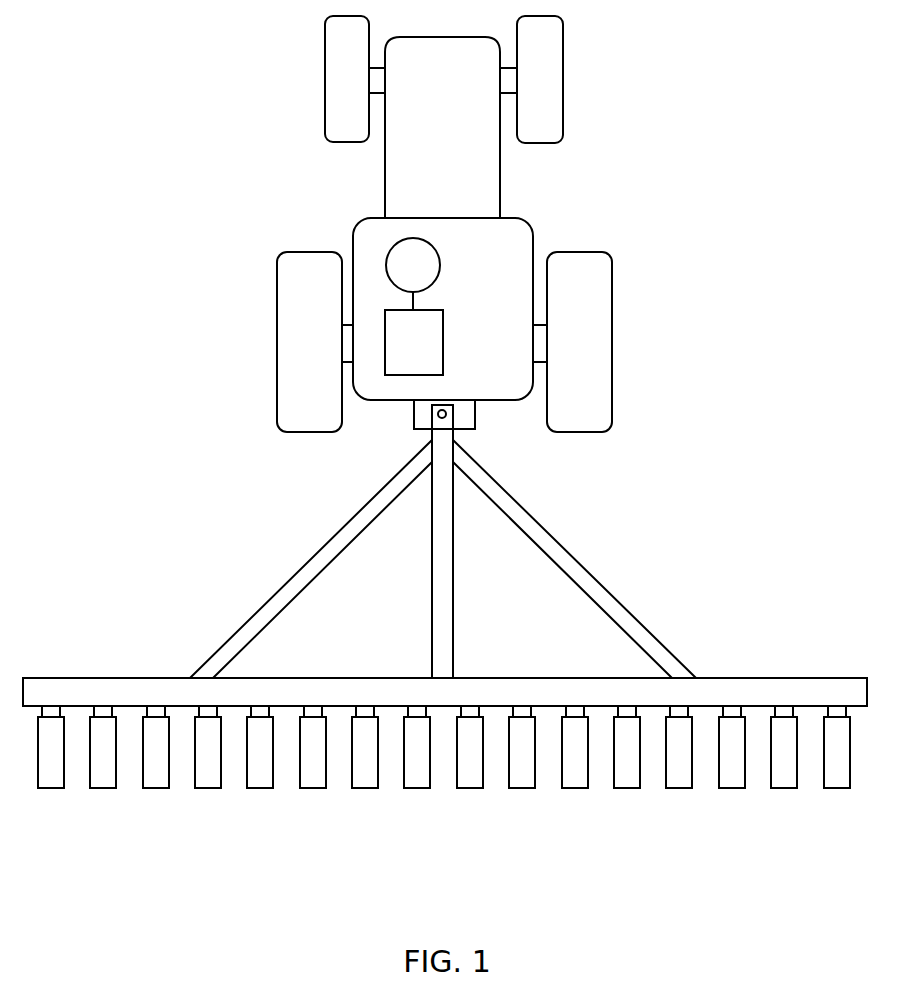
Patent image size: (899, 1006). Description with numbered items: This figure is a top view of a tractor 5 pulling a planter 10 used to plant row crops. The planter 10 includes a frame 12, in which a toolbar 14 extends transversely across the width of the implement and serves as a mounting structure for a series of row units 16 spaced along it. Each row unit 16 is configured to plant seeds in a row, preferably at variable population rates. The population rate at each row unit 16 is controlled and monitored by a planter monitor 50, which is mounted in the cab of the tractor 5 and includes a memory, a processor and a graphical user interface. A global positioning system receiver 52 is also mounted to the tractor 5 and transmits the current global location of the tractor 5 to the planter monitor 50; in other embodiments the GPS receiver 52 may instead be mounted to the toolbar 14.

The tractor 5 is at (520, 224).
The planter 10 is at (225, 515).
The frame 12 is at (432, 562).
The toolbar 14 is at (147, 678).
The row unit 16 is at (260, 790).
The planter monitor 50 is at (414, 342).
The GPS receiver 52 is at (413, 265).